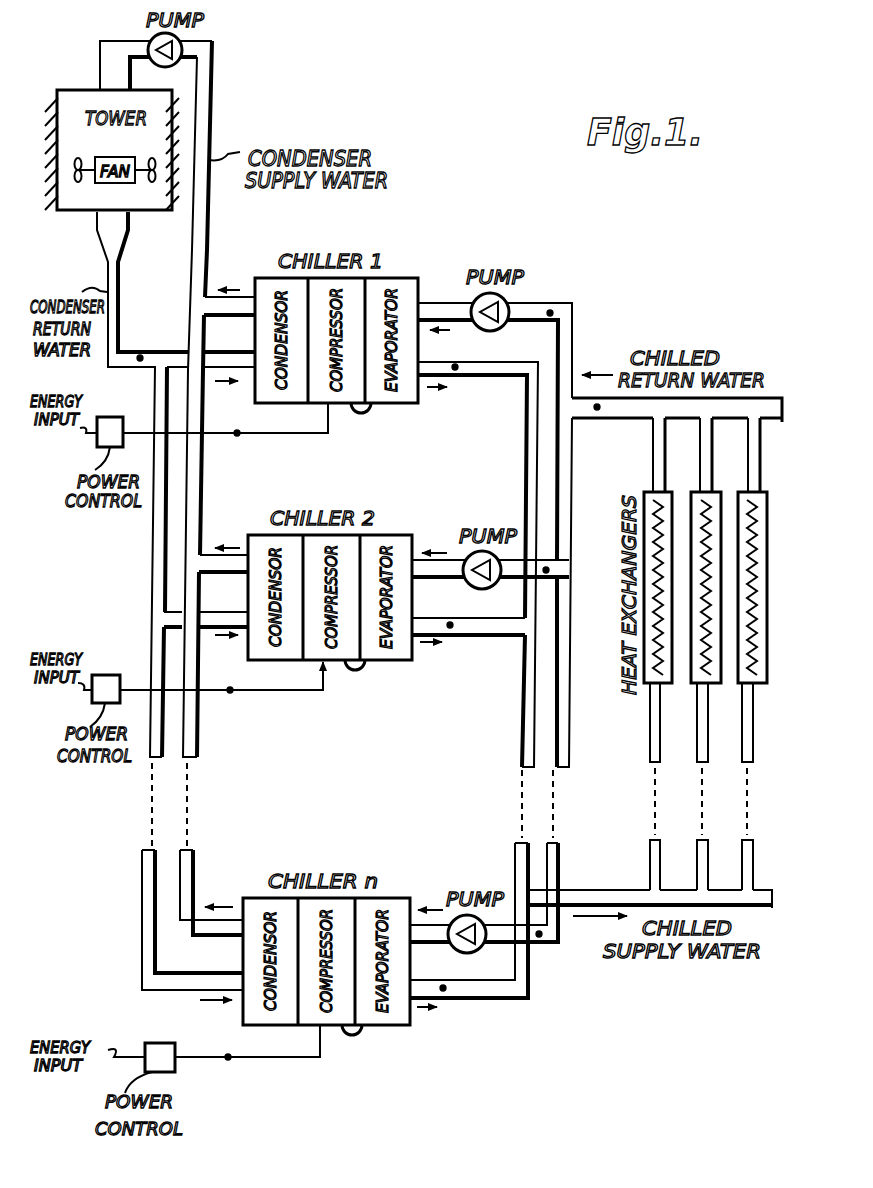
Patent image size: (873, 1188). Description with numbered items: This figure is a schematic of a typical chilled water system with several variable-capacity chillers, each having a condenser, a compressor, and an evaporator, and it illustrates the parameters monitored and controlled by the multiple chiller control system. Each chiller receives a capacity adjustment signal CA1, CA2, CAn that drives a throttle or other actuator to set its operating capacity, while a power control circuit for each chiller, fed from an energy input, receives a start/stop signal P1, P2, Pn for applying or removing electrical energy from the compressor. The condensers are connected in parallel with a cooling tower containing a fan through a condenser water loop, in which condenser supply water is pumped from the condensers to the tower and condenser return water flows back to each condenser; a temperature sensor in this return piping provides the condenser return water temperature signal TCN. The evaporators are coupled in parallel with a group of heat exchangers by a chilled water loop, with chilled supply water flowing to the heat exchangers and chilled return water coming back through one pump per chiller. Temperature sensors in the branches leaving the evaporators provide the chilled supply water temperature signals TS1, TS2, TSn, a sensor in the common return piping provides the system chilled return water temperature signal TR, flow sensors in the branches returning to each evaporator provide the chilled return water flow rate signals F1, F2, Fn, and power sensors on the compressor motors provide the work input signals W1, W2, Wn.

The start/stop signal P1 is at (111, 416).
The start/stop signal P2 is at (107, 674).
The start/stop signal Pn is at (160, 1042).
The condenser return water temperature signal TCN is at (140, 356).
The work input signal W1 is at (237, 435).
The work input signal W2 is at (230, 692).
The work input signal Wn is at (228, 1059).
The capacity adjustment signal CA1 is at (362, 416).
The capacity adjustment signal CA2 is at (355, 675).
The capacity adjustment signal CAn is at (352, 1040).
The chilled supply water temperature signal TS1 is at (455, 369).
The chilled supply water temperature signal TS2 is at (450, 627).
The chilled supply water temperature signal TSn is at (443, 990).
The chilled return water flow rate signal F1 is at (550, 315).
The chilled return water flow rate signal F2 is at (546, 572).
The chilled return water flow rate signal Fn is at (539, 936).
The system chilled return water temperature signal TR is at (597, 409).